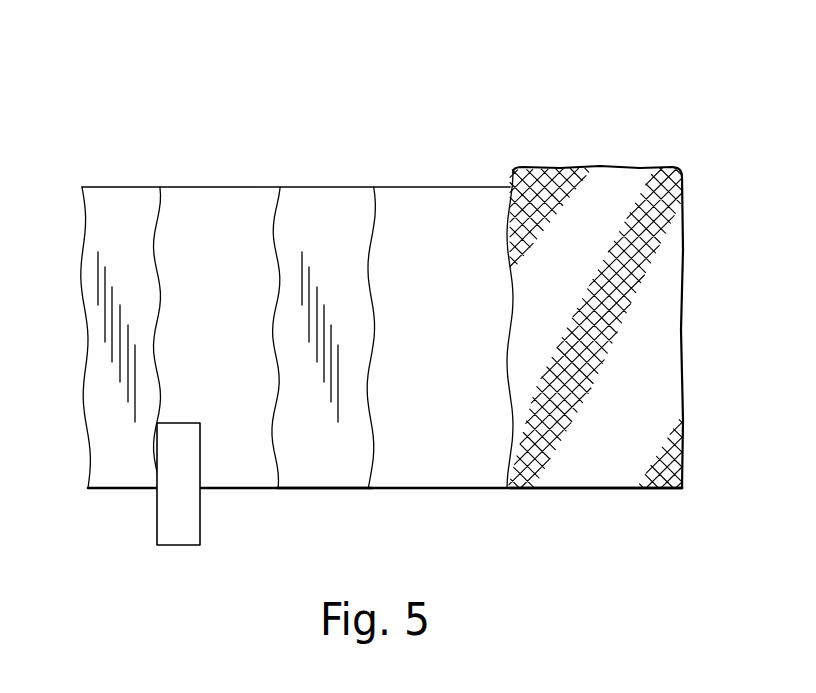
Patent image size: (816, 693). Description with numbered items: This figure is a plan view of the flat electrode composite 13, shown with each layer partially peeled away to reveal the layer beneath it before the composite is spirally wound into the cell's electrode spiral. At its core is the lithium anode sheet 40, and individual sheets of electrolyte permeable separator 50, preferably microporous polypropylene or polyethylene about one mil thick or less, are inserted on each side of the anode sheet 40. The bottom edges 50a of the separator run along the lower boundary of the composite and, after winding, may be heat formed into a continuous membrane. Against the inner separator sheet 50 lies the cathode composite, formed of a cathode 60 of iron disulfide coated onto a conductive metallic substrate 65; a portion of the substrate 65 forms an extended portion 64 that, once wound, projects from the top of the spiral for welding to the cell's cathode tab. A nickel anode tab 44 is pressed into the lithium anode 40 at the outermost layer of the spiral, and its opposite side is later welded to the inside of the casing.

The flat electrode composite 13 is at (268, 92).
The lithium anode sheet 40 is at (218, 193).
The anode tab 44 is at (157, 515).
The separator sheet 50 is at (117, 193).
The bottom edge of separator 50a is at (322, 478).
The cathode 60 is at (443, 193).
The extended portion of cathode substrate 64 is at (613, 168).
The cathode substrate 65 is at (592, 478).